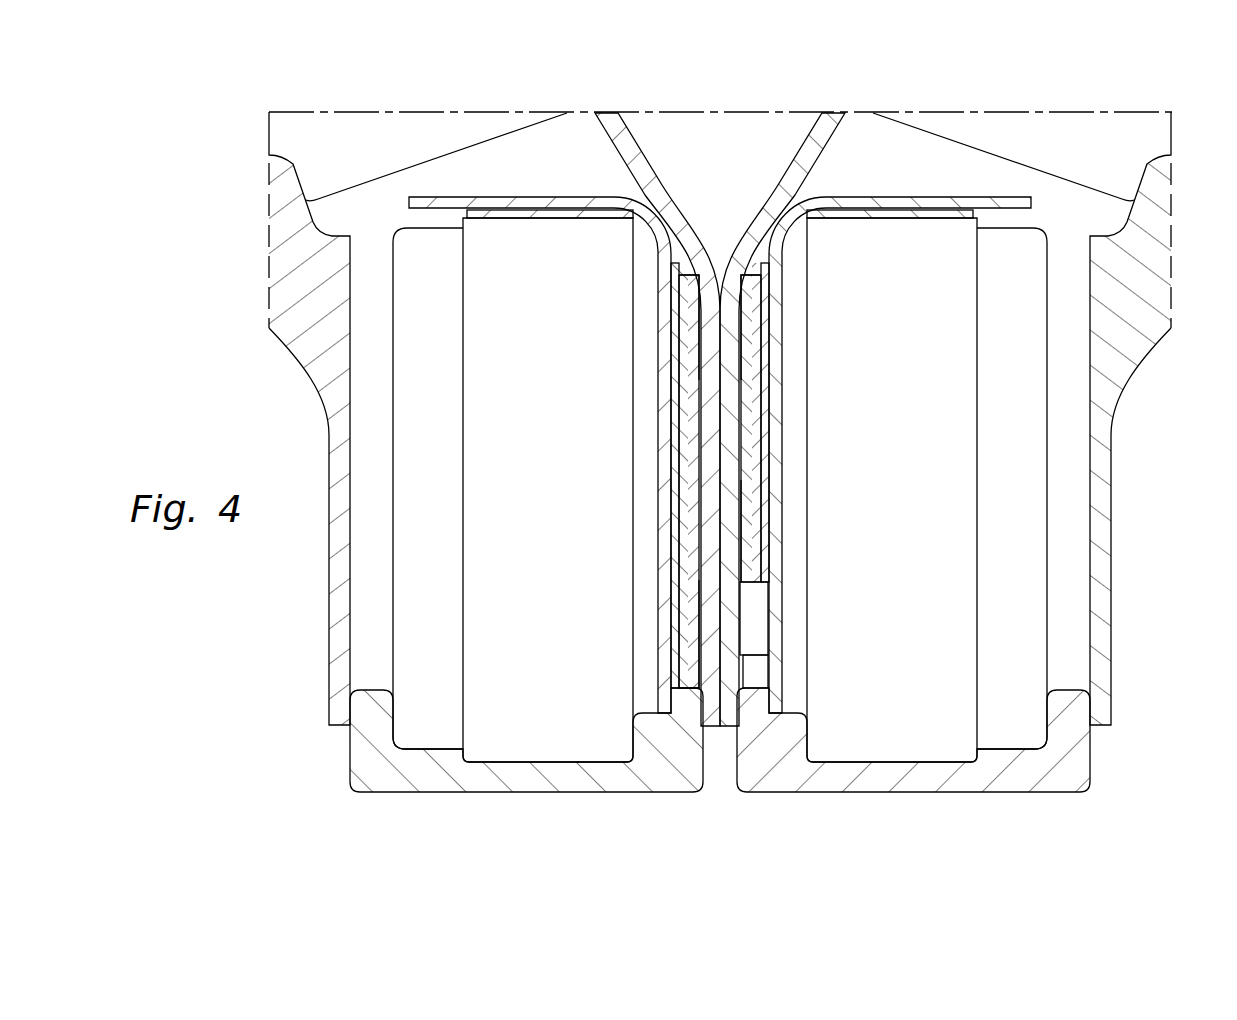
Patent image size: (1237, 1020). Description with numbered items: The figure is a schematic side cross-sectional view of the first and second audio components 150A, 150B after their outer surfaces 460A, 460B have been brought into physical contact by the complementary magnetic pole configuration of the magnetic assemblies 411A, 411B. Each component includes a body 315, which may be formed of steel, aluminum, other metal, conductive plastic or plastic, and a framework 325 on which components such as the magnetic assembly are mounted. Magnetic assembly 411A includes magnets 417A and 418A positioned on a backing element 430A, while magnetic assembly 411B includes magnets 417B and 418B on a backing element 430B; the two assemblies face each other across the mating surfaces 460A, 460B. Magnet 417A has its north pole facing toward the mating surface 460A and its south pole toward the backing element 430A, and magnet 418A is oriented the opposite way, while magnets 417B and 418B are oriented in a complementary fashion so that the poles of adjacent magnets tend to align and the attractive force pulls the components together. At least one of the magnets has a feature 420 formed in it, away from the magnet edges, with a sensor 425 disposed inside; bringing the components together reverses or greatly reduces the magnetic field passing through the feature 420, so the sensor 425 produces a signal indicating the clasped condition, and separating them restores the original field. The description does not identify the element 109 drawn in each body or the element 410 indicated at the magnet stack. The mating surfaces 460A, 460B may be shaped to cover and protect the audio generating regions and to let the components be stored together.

The coil 109 is at (527, 507).
The first audio component 150A is at (296, 684).
The second audio component 150B is at (1144, 684).
The body 315 is at (774, 785).
The framework 325 is at (866, 175).
The electrode stack 410 is at (632, 466).
The magnetic assembly 411A is at (670, 360).
The magnetic assembly 411B is at (770, 360).
The magnet 417A is at (688, 333).
The magnet 417B is at (752, 333).
The magnet 418A is at (690, 540).
The magnet 418B is at (750, 540).
The feature 420 is at (753, 673).
The sensor 425 is at (753, 621).
The backing element 430A is at (678, 424).
The backing element 430B is at (762, 424).
The outer surface 460A is at (625, 133).
The outer surface 460B is at (818, 133).